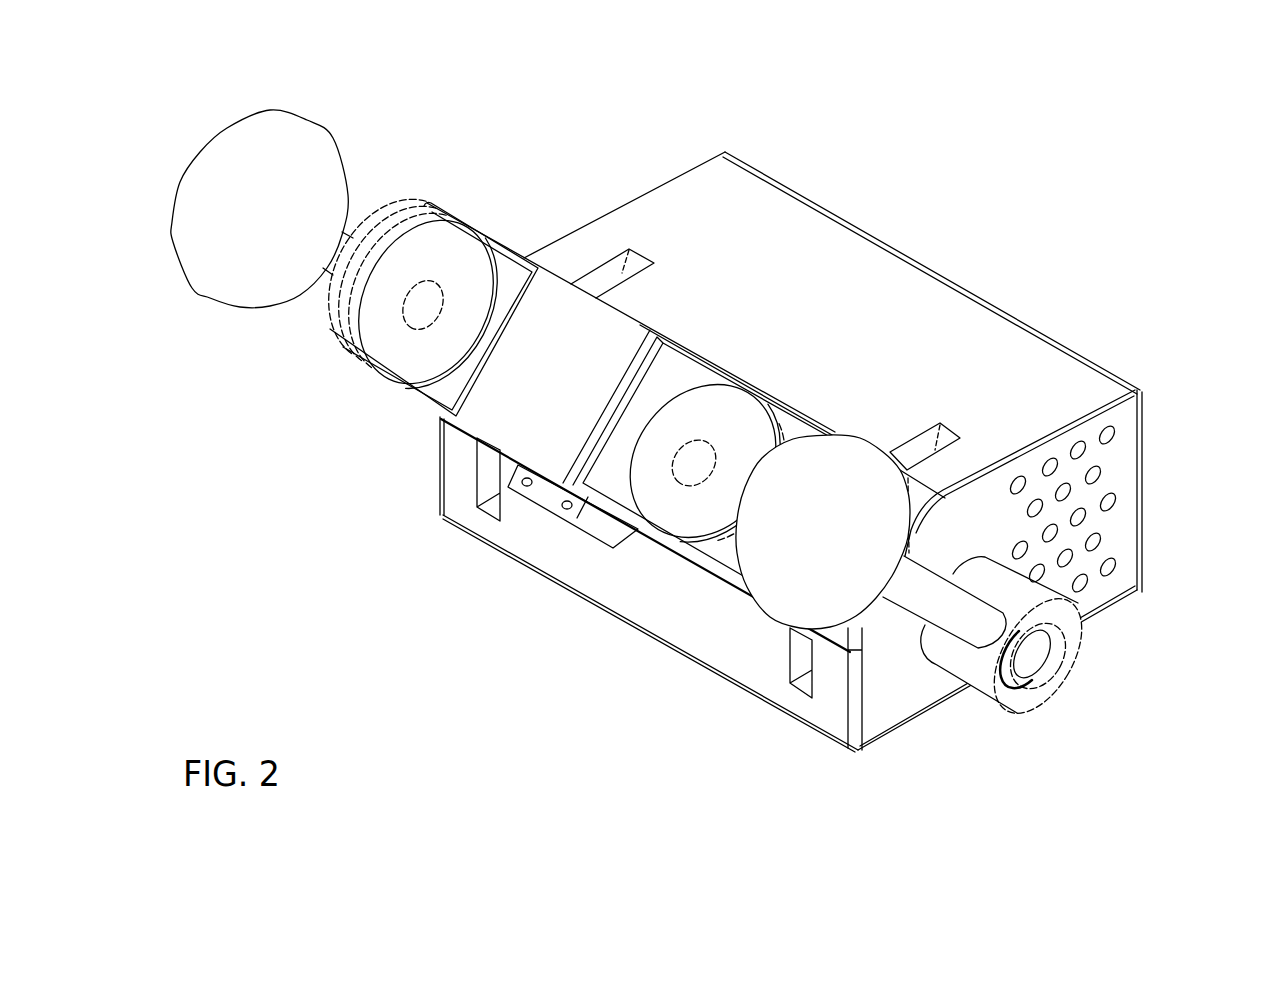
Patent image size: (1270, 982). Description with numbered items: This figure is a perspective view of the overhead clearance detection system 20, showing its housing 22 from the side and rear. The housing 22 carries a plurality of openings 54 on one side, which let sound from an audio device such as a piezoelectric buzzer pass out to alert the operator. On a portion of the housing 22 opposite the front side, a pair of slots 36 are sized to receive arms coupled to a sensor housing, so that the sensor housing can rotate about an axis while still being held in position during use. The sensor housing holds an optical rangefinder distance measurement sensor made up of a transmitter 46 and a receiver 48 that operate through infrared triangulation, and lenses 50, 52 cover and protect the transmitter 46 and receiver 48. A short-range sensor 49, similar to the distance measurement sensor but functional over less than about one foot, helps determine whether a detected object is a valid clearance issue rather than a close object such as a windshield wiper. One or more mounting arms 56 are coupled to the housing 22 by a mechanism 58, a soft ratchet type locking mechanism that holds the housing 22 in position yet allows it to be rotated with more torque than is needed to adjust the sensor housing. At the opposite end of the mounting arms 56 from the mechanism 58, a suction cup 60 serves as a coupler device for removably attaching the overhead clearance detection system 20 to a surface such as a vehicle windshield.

The overhead clearance detection system 20 is at (1133, 166).
The housing 22 is at (740, 155).
The slots 36 is at (477, 480).
The transmitter 46 is at (690, 482).
The receiver 48 is at (410, 315).
The short-range sensor 49 is at (557, 518).
The lens 50 is at (652, 487).
The lens 52 is at (440, 347).
The openings 54 is at (1137, 519).
The mounting arms 56 is at (953, 598).
The mechanism 58 is at (1048, 695).
The suction cup 60 is at (193, 153).